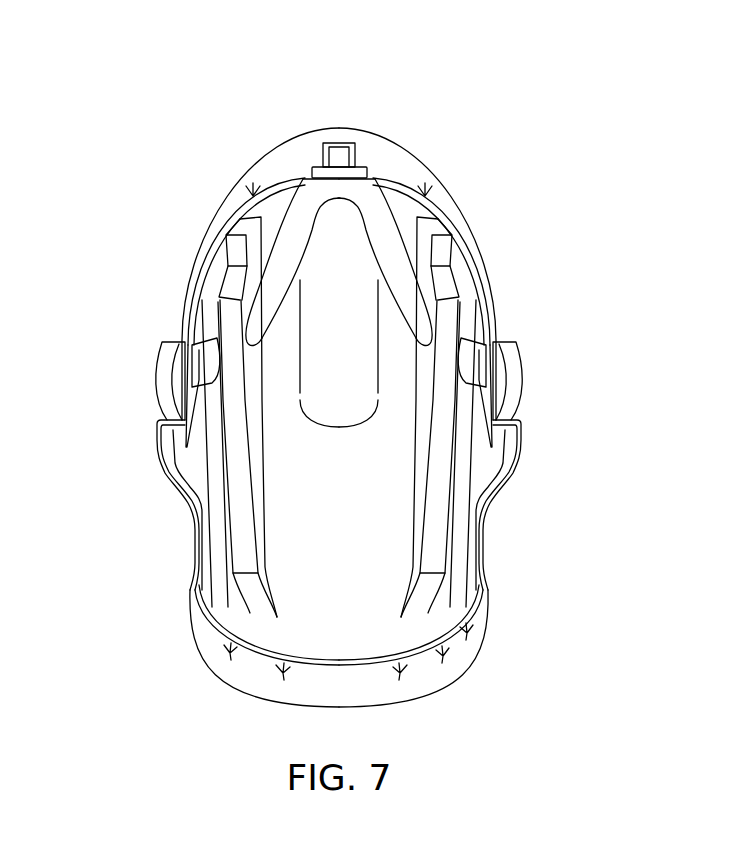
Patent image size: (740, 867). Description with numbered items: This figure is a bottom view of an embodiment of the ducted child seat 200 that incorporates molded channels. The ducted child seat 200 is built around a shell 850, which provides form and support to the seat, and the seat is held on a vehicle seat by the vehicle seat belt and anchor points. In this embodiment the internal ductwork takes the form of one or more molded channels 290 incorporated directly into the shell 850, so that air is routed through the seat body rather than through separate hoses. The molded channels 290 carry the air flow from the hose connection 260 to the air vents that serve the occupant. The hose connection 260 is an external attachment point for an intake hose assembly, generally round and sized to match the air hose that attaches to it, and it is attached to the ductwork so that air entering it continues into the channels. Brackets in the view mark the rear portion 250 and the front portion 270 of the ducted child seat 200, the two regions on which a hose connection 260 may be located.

The ducted child seat 200 is at (522, 72).
The rear portion 250 is at (130, 112).
The hose connection 260 is at (353, 143).
The front portion 270 is at (137, 622).
The molded channels 290 is at (412, 372).
The shell 850 is at (450, 539).